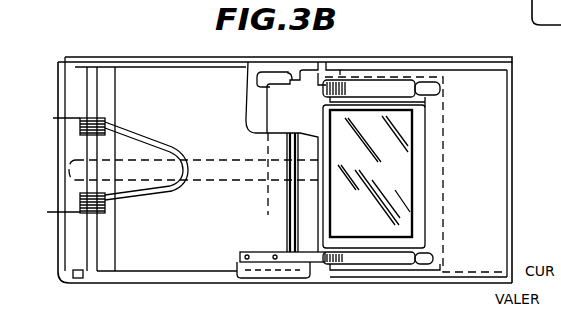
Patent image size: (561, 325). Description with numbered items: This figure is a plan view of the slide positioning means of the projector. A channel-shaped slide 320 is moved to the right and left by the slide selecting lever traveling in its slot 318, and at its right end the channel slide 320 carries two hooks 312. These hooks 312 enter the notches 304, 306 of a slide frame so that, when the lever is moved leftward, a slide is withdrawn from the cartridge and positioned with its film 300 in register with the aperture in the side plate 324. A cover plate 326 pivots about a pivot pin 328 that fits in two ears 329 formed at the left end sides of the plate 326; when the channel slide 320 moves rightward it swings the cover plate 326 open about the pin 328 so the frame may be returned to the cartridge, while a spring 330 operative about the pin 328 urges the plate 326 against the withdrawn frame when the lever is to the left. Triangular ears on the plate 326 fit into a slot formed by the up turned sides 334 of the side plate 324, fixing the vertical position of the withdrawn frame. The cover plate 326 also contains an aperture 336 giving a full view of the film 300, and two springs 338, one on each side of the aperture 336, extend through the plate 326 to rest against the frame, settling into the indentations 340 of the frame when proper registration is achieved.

The film 300 is at (422, 208).
The notch 304 is at (300, 277).
The notch 306 is at (305, 78).
The hooks 312 is at (282, 72).
The slot 318 is at (232, 176).
The channel-shaped slide 320 is at (248, 72).
The side plate 324 is at (512, 110).
The cover plate 326 is at (508, 138).
The pivot pin 328 is at (82, 246).
The ears 329 is at (153, 67).
The spring 330 is at (130, 140).
The up turned sides 334 is at (435, 62).
The aperture 336 is at (428, 168).
The springs 338 is at (443, 93).
The indentations 340 is at (524, 12).